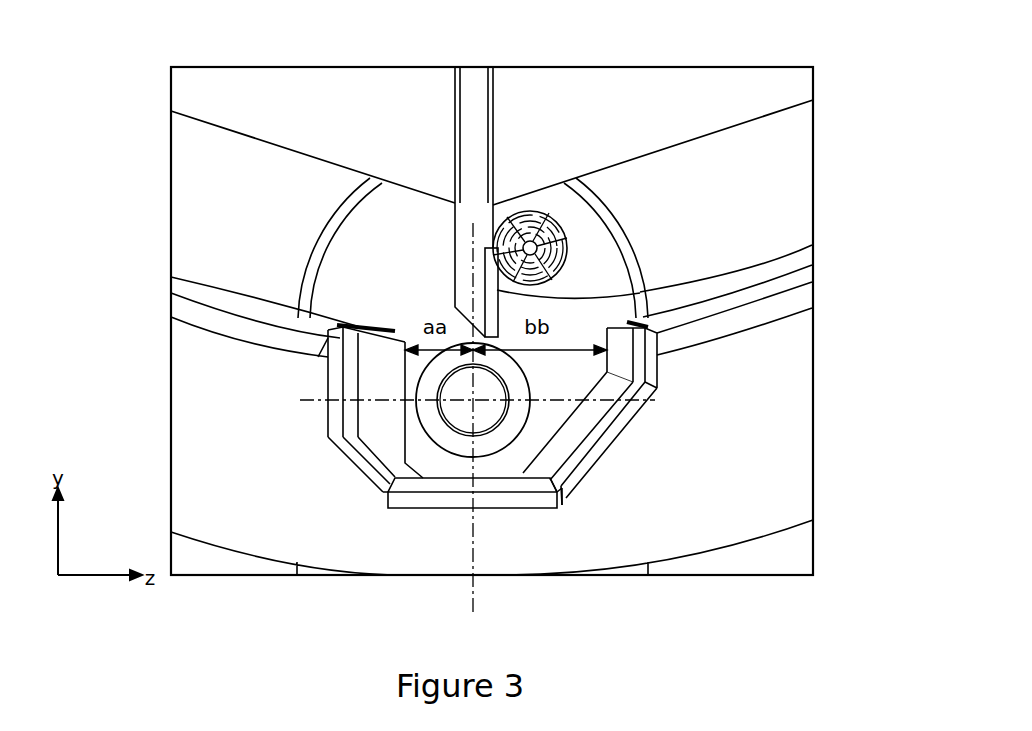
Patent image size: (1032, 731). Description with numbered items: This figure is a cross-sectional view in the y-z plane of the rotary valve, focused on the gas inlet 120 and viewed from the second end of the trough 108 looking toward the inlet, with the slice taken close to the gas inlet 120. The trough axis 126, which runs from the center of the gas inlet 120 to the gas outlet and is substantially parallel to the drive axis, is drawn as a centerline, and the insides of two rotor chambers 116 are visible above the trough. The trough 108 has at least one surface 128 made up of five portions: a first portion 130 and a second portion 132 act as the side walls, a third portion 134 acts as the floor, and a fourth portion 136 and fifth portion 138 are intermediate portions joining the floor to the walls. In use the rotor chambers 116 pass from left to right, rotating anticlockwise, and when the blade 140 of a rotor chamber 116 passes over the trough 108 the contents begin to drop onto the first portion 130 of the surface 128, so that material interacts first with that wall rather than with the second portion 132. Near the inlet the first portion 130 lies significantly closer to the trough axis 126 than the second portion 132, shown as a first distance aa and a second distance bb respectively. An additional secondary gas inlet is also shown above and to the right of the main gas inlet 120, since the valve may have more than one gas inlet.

The trough 108 is at (543, 470).
The rotor chambers 116 is at (218, 150).
The gas inlet 120 is at (527, 427).
The trough axis 126 is at (625, 408).
The at least one surface 128 is at (372, 350).
The first portion 130 is at (350, 388).
The second portion 132 is at (637, 368).
The third portion 134 is at (438, 482).
The fourth portion 136 is at (372, 463).
The fifth portion 138 is at (597, 435).
The blade 140 is at (813, 245).